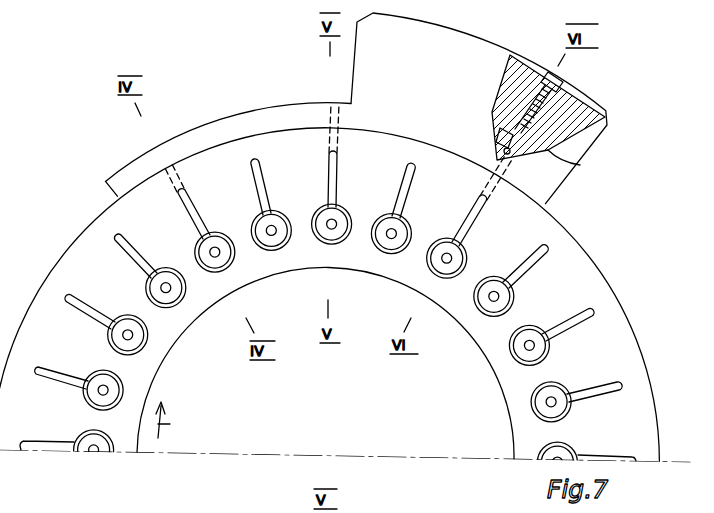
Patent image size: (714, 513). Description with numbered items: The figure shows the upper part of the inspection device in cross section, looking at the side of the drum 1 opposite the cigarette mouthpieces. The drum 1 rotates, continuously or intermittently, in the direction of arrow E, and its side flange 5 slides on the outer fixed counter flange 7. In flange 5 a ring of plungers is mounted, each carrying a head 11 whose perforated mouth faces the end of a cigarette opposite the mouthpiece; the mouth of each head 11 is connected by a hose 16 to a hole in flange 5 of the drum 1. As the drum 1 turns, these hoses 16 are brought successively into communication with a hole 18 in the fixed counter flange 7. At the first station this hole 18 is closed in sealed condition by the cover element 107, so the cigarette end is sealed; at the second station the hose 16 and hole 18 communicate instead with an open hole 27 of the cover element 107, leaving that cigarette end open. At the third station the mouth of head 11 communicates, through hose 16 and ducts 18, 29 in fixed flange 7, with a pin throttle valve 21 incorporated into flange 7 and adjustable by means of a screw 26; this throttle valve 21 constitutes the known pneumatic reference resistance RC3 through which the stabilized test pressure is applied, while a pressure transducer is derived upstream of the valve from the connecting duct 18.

The drum 1 is at (256, 435).
The side flange 5 is at (590, 278).
The fixed counter flange 7 is at (453, 40).
The head 11 is at (158, 288).
The hose 16 is at (120, 250).
The hole 18 is at (176, 172).
The throttle valve 21 is at (503, 137).
The screw 26 is at (552, 108).
The open hole 27 is at (327, 112).
The duct 29 is at (504, 153).
The cover element 107 is at (128, 168).
The pneumatic reference resistance RC3 is at (547, 165).
The arrow E is at (170, 420).